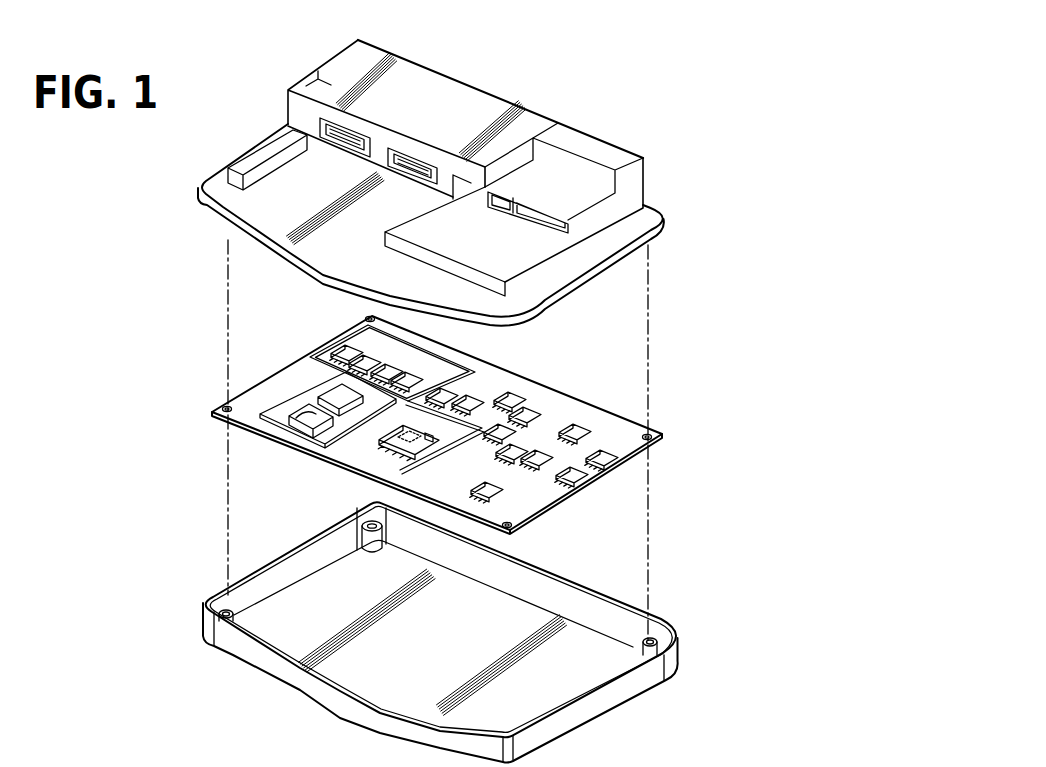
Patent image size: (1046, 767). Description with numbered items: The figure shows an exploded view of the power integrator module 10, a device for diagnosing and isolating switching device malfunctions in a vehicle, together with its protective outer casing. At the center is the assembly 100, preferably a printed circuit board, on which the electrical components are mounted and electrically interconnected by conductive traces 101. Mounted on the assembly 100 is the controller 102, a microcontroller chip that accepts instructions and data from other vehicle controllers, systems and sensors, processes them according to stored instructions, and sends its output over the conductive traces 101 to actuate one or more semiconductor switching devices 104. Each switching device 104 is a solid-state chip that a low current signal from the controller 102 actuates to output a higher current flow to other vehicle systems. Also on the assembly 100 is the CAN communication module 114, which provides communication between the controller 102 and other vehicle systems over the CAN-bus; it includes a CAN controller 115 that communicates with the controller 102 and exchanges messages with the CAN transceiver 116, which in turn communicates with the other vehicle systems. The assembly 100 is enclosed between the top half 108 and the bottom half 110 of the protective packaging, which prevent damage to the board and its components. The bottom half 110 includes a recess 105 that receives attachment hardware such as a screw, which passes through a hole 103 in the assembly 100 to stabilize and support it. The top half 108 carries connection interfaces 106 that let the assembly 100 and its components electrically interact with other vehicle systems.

The power integrator module 10 is at (552, 44).
The assembly 100 is at (587, 410).
The conductive traces 101 is at (449, 372).
The controller 102 is at (380, 441).
The hole 103 is at (368, 317).
The semiconductor switching devices 104 is at (590, 416).
The recess 105 is at (658, 641).
The connection interfaces 106 is at (542, 217).
The top half 108 is at (650, 218).
The bottom half 110 is at (604, 690).
The CAN communication module 114 is at (300, 400).
The CAN controller 115 is at (340, 393).
The CAN transceiver 116 is at (291, 419).